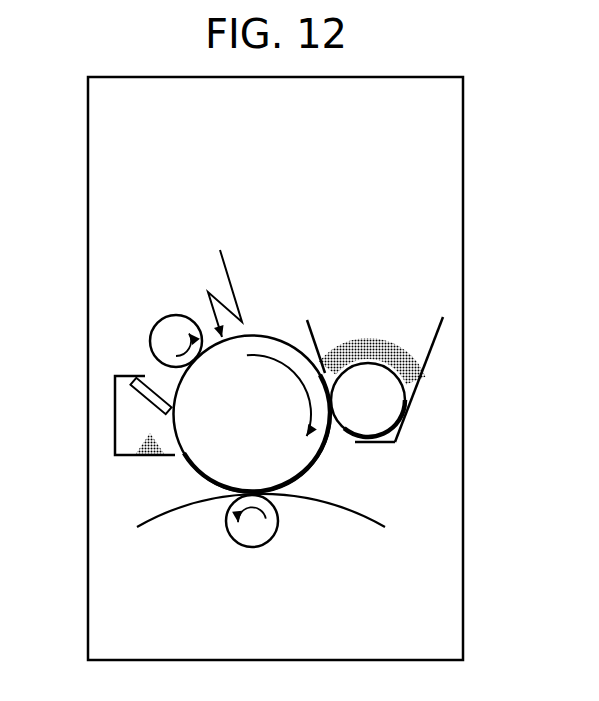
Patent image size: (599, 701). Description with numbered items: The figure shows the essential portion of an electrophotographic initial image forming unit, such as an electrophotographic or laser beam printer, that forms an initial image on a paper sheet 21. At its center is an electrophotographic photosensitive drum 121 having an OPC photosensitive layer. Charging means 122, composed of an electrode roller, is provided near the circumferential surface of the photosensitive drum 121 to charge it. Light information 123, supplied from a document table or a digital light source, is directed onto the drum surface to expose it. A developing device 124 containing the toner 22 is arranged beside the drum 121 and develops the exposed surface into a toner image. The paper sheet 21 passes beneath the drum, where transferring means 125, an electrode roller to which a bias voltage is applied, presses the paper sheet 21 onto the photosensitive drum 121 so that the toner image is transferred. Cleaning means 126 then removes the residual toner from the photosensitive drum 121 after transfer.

The electrophotographic photosensitive drum 121 is at (318, 460).
The charging means 122 is at (157, 318).
The light information 123 is at (230, 278).
The developing device 124 is at (423, 378).
The toner 22 is at (365, 338).
The transferring means 125 is at (265, 547).
The cleaning means 126 is at (118, 418).
The paper sheet 21 is at (350, 520).